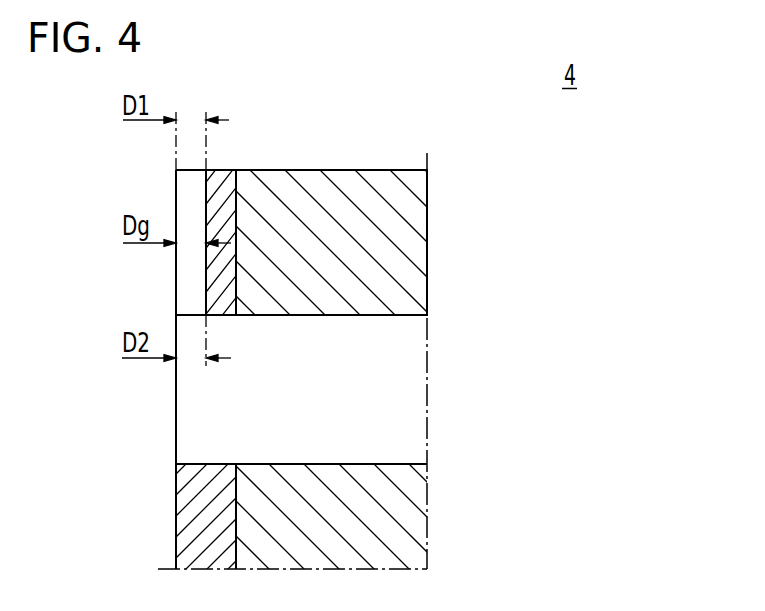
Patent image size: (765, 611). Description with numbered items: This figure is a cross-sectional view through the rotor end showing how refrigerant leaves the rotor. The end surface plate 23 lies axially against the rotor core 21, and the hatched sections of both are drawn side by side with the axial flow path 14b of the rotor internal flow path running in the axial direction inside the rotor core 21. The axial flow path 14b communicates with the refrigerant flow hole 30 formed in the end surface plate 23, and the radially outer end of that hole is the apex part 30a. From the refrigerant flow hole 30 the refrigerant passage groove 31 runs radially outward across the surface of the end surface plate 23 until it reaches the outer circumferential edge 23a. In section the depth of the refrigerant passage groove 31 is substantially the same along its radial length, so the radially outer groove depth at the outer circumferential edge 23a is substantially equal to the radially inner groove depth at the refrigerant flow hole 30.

The axial flow path 14b is at (383, 463).
The rotor core 21 is at (371, 193).
The end surface plate 23 is at (176, 505).
The outer circumferential edge 23a is at (222, 170).
The refrigerant flow hole 30 is at (210, 463).
The apex part 30a is at (206, 316).
The refrigerant passage groove 31 is at (206, 192).